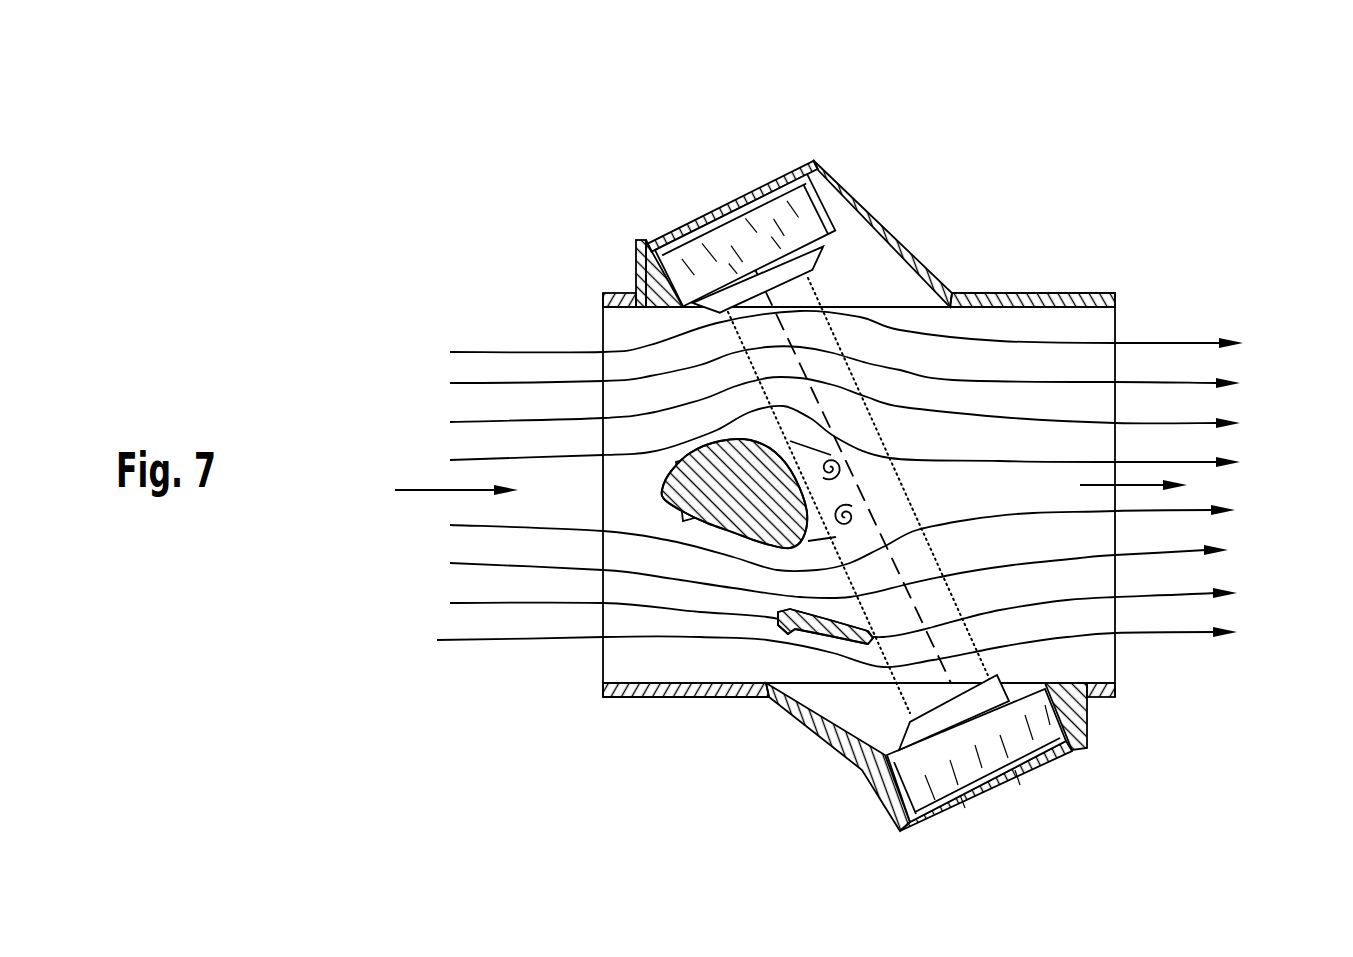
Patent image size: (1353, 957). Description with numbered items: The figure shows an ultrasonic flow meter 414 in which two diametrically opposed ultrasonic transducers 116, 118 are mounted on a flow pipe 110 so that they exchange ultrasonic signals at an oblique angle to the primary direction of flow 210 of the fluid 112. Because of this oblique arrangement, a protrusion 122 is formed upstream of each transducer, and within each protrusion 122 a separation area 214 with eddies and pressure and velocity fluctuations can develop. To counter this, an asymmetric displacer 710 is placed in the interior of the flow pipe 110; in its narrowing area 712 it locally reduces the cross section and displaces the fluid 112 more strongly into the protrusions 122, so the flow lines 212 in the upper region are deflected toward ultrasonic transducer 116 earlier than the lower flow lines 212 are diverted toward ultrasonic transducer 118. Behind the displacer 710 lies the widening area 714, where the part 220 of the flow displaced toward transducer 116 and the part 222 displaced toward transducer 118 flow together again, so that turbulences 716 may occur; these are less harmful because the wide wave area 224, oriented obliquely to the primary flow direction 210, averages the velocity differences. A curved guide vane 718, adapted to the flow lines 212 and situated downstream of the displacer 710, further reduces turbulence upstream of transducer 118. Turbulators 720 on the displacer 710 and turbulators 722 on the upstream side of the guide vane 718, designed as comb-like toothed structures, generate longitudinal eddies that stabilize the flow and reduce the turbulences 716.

The flow pipe 110 is at (1075, 293).
The fluid 112 is at (426, 490).
The ultrasonic transducer 116 is at (757, 227).
The ultrasonic transducer 118 is at (950, 660).
The protrusion 122 is at (876, 288).
The primary direction of flow 210 is at (1150, 484).
The flow lines 212 is at (1197, 595).
The separation area 214 is at (842, 273).
The part of the flow 220 is at (672, 360).
The part of the flow 222 is at (727, 620).
The wave area 224 is at (1020, 770).
The ultrasonic flow meter 414 is at (838, 165).
The displacer 710 is at (743, 500).
The narrowing area 712 is at (663, 523).
The widening area 714 is at (812, 432).
The turbulences 716 is at (832, 460).
The guide vane 718 is at (823, 632).
The turbulators 720 is at (682, 460).
The turbulators 722 is at (793, 630).